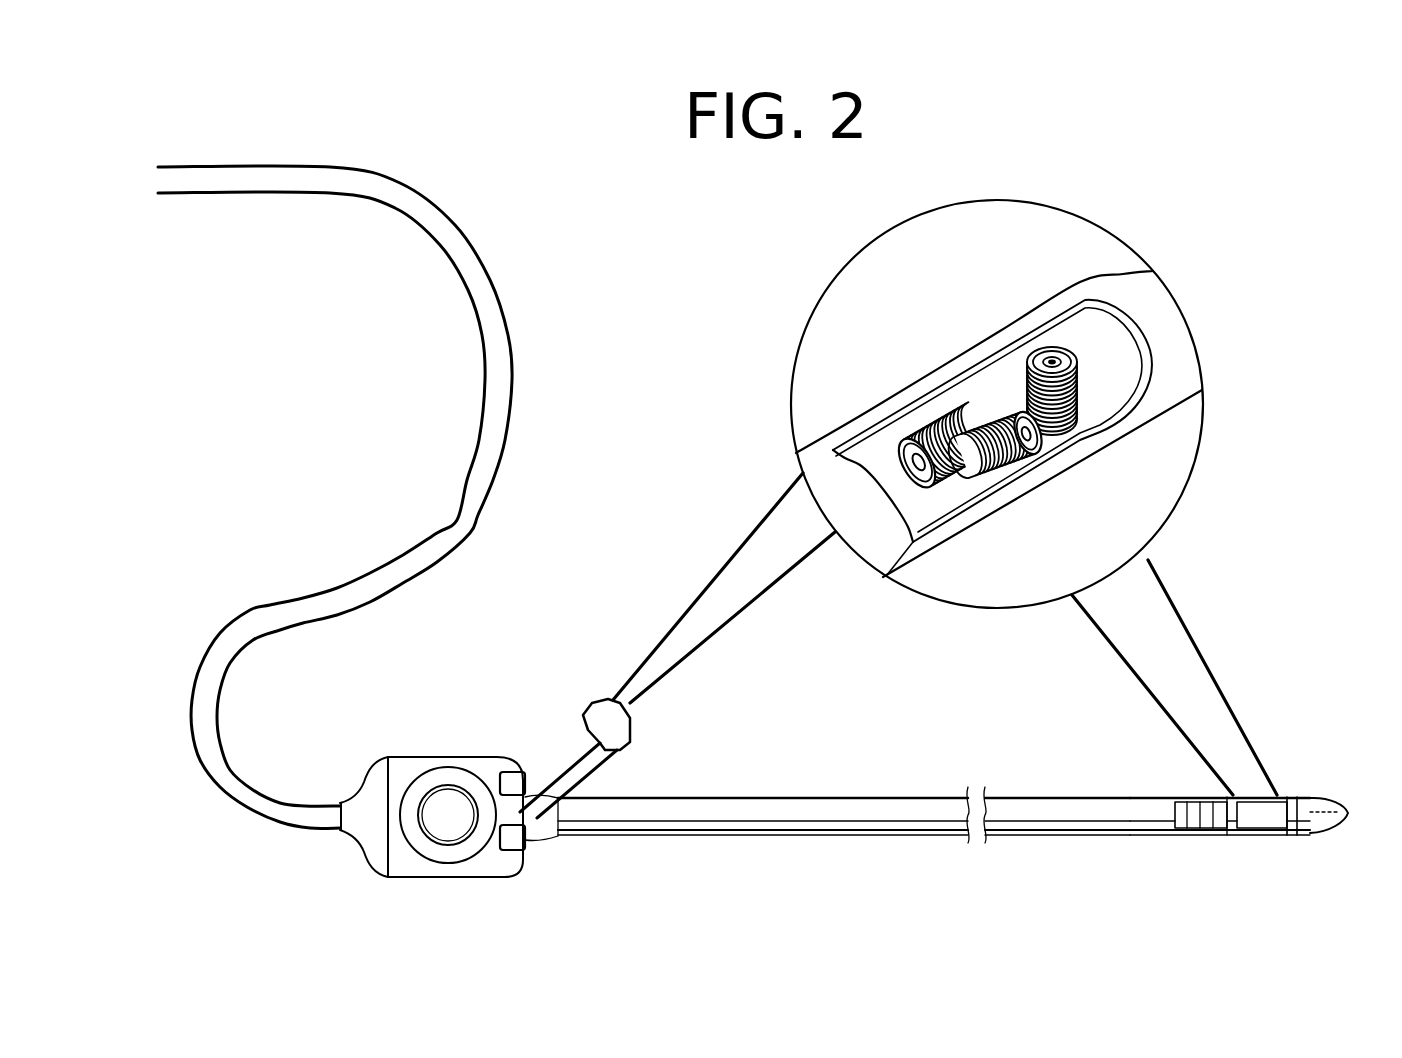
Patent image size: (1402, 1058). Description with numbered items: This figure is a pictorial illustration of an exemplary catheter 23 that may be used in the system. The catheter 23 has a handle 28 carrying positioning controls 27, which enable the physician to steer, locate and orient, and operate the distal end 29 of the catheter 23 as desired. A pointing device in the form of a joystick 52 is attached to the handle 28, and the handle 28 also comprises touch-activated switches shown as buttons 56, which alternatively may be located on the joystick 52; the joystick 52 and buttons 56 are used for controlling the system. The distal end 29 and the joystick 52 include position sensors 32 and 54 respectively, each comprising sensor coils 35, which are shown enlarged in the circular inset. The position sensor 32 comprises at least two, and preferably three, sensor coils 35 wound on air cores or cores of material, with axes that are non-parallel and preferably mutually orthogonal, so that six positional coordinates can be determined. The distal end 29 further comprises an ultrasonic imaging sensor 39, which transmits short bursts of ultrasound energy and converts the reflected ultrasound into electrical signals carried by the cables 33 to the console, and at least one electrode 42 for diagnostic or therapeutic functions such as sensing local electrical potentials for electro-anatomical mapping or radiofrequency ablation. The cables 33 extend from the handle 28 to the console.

The catheter 23 is at (857, 790).
The positioning controls 27 is at (457, 770).
The handle 28 is at (452, 878).
The distal end 29 is at (1137, 848).
The position sensor 32 is at (1263, 818).
The cables 33 is at (433, 232).
The sensor coils 35 is at (920, 432).
The ultrasonic imaging sensor 39 is at (1158, 797).
The electrode 42 is at (1303, 833).
The joystick 52 is at (570, 743).
The position sensor 54 is at (600, 700).
The buttons 56 is at (514, 772).